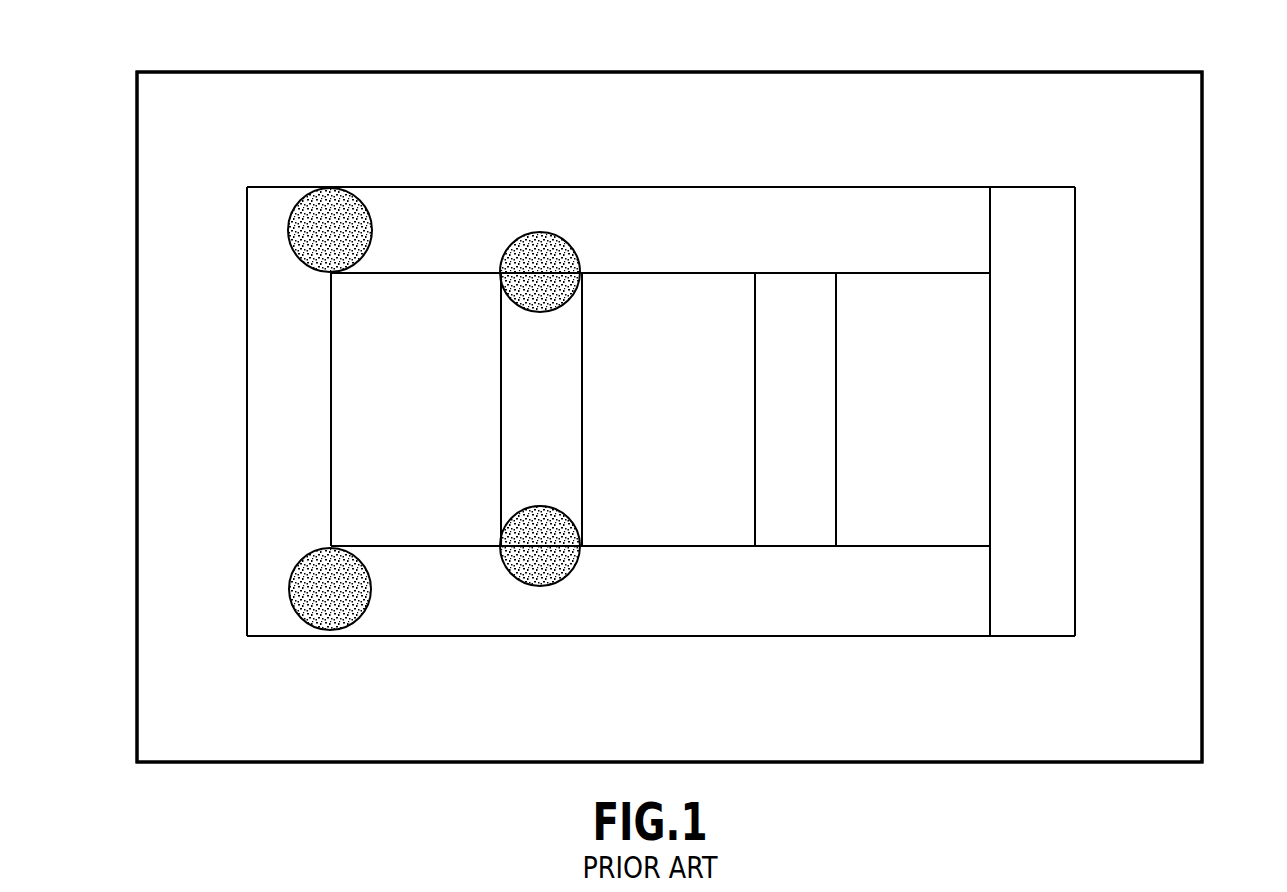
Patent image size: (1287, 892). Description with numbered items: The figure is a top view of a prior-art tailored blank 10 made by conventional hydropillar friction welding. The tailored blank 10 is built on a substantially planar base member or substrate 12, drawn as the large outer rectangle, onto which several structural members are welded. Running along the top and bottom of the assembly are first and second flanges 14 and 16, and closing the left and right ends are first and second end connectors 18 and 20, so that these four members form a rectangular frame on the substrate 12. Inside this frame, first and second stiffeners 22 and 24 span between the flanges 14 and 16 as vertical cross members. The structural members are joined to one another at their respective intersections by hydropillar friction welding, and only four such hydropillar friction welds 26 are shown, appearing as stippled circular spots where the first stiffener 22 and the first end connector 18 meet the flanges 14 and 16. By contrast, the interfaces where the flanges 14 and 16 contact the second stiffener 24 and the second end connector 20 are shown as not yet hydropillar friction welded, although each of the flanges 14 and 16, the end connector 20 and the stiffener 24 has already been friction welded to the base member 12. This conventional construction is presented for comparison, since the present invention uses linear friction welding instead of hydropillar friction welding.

The tailored blank 10 is at (982, 46).
The base member or substrate 12 is at (1186, 297).
The first flange 14 is at (580, 203).
The second flange 16 is at (855, 613).
The first end connector 18 is at (263, 435).
The second end connector 20 is at (1060, 407).
The first stiffener 22 is at (566, 407).
The second stiffener 24 is at (820, 407).
The hydropillar friction welds 26 is at (527, 252).